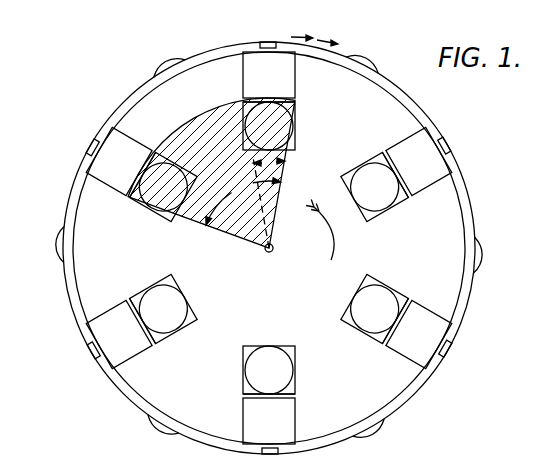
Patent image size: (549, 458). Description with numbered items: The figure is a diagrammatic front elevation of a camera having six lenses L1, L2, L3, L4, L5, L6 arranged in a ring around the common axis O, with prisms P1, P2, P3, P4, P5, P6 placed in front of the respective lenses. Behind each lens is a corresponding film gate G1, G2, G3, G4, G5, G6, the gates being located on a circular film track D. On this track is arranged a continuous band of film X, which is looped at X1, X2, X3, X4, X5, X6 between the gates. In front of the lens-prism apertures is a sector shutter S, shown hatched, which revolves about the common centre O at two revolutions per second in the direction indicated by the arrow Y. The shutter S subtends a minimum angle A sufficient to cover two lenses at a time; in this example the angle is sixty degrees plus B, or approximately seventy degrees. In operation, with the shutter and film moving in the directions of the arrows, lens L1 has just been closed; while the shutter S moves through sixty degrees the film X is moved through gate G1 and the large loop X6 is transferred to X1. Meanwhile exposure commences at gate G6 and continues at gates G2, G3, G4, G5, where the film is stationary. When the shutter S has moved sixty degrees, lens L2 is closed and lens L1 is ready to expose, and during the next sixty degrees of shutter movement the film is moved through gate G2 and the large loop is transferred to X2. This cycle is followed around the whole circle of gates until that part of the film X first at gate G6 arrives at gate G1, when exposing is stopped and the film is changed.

The continuous band of film X is at (208, 50).
The film loop X1 is at (374, 64).
The film loop X2 is at (482, 259).
The film loop X3 is at (375, 431).
The film loop X4 is at (162, 429).
The film loop X5 is at (60, 245).
The film loop X6 is at (165, 61).
The circular film track D is at (388, 92).
The film gate G1 is at (273, 42).
The film gate G2 is at (449, 139).
The film gate G3 is at (449, 352).
The film gate G4 is at (285, 453).
The film gate G5 is at (92, 350).
The film gate G6 is at (90, 148).
The lens L1 is at (269, 75).
The lens L2 is at (419, 161).
The lens L3 is at (419, 334).
The lens L4 is at (269, 421).
The lens L5 is at (119, 334).
The lens L6 is at (119, 161).
The prism P1 is at (269, 126).
The prism P2 is at (375, 186).
The prism P3 is at (375, 308).
The prism P4 is at (269, 370).
The prism P5 is at (164, 308).
The prism P6 is at (164, 186).
The sector shutter S is at (226, 175).
The minimum angle A is at (243, 200).
The additional angle B is at (269, 163).
The common axis O is at (268, 253).
The direction of rotation Y is at (320, 237).